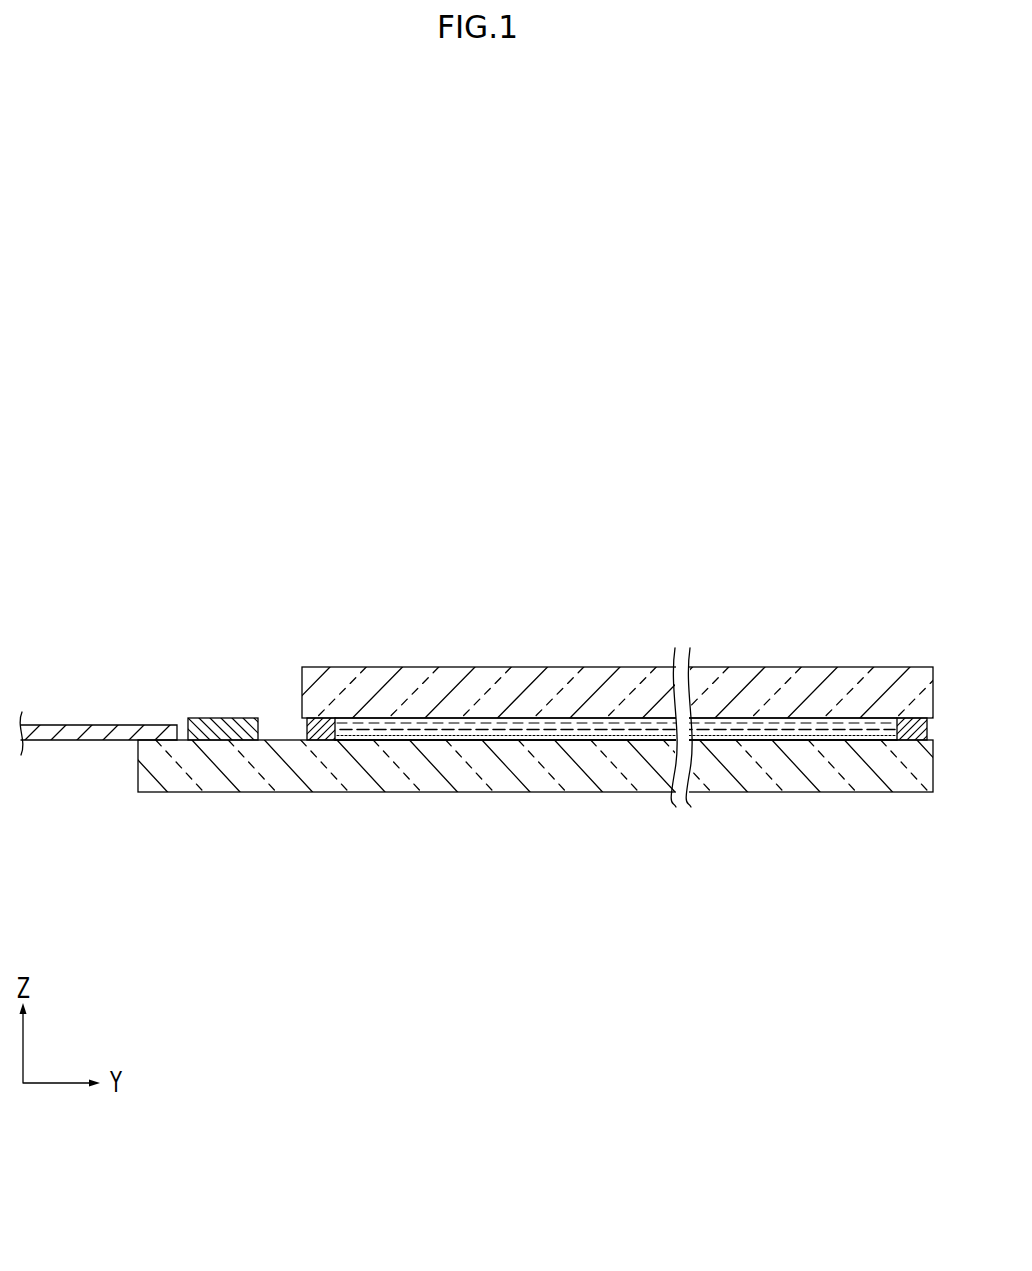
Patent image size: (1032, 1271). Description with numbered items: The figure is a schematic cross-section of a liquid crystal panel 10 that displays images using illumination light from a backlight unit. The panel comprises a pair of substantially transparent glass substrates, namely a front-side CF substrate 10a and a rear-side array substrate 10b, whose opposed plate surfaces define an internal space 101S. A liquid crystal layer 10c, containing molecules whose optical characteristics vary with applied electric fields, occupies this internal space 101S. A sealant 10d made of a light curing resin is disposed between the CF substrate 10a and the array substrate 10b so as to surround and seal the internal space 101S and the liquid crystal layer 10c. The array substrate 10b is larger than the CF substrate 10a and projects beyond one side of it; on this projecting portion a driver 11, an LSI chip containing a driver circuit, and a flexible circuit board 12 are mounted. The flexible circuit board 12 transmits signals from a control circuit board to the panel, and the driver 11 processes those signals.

The liquid crystal panel 10 is at (569, 722).
The CF substrate 10a is at (518, 682).
The array substrate 10b is at (433, 780).
The liquid crystal layer 10c is at (593, 727).
The sealant 10d is at (322, 738).
The internal space 101S is at (531, 742).
The driver 11 is at (220, 717).
The flexible circuit board 12 is at (80, 725).